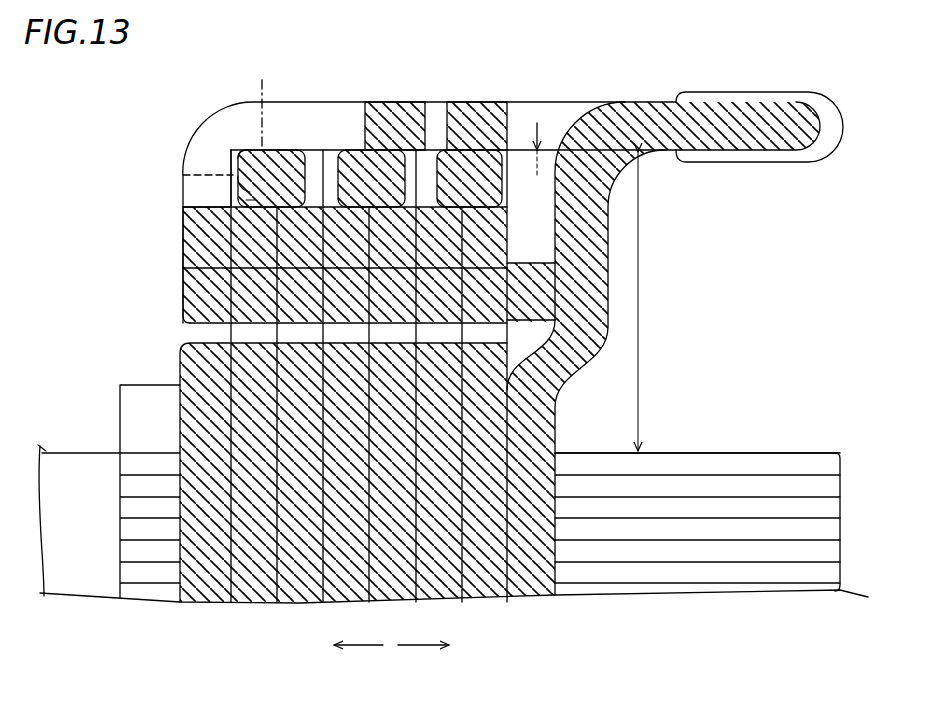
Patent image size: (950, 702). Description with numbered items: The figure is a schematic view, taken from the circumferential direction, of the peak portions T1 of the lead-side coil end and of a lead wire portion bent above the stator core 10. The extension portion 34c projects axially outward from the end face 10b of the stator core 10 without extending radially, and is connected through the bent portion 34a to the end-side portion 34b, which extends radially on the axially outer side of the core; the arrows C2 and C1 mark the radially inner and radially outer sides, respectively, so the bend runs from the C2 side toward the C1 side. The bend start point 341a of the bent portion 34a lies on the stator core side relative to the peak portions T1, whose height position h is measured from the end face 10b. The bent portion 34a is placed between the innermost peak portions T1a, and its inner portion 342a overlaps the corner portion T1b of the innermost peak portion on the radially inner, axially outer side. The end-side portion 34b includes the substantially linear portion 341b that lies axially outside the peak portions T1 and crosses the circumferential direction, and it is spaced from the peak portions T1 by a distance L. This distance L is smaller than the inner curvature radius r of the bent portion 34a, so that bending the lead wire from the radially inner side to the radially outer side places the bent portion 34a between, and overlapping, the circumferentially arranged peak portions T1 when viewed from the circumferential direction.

The bent portion 34a is at (194, 147).
The end-side portion 34b is at (537, 316).
The bend start point 341a is at (172, 170).
The portion extending to cross the circumferential direction 341b is at (759, 127).
The extension portion 34c is at (193, 188).
The inner portion 342a is at (185, 219).
The peak portion T1 is at (401, 128).
The innermost peak portion T1a is at (286, 154).
The corner portion T1b is at (242, 154).
The inner curvature radius r is at (248, 199).
The distance L is at (549, 147).
The height position h is at (650, 301).
The stator core 10 is at (785, 452).
The end face 10b is at (725, 450).
The radially outer direction C1 is at (423, 664).
The radially inner direction C2 is at (358, 664).